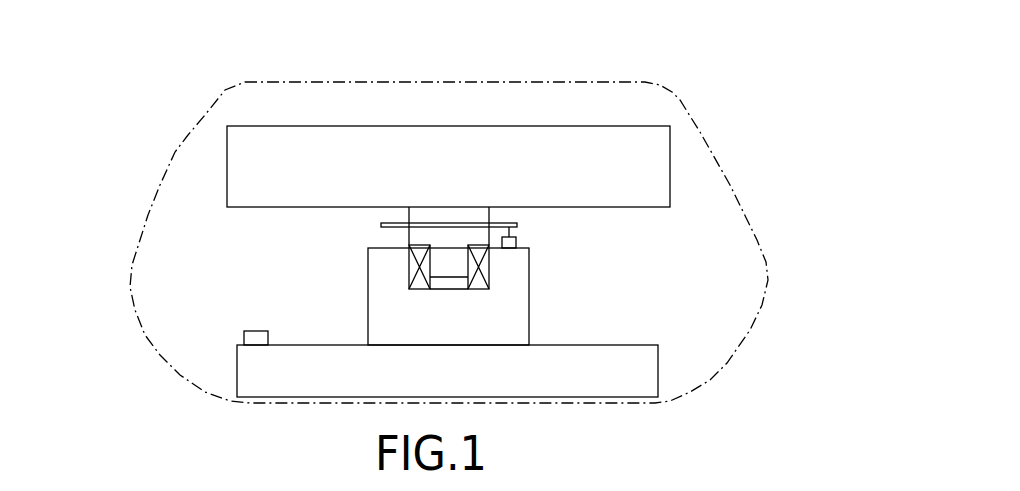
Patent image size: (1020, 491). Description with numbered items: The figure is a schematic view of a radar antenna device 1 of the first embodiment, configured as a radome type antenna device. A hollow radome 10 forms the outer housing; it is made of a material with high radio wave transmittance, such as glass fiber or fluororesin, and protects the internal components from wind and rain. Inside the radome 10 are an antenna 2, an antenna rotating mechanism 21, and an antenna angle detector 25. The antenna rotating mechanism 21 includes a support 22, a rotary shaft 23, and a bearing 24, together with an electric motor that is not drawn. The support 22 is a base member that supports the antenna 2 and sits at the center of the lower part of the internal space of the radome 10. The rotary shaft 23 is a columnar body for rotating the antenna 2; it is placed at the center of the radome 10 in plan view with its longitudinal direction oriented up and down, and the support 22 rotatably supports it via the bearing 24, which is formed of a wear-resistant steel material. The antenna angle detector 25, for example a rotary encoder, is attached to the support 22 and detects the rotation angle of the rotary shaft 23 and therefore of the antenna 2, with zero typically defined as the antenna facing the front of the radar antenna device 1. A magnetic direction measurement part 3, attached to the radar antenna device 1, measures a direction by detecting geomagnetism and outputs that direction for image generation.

The radar antenna device 1 is at (691, 83).
The antenna 2 is at (614, 143).
The magnetic direction measurement part 3 is at (255, 337).
The radome 10 is at (176, 153).
The antenna rotating mechanism 21 is at (563, 270).
The support 22 is at (559, 363).
The rotary shaft 23 is at (407, 213).
The bearing 24 is at (407, 267).
The antenna angle detector 25 is at (517, 243).